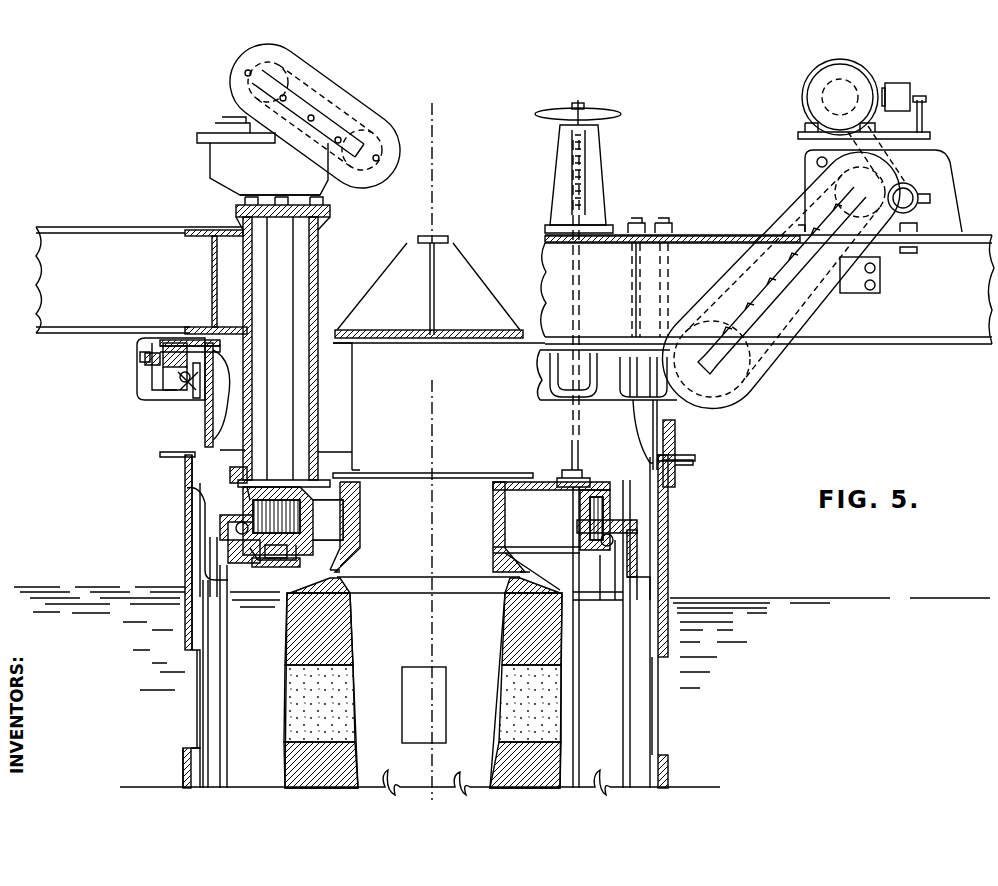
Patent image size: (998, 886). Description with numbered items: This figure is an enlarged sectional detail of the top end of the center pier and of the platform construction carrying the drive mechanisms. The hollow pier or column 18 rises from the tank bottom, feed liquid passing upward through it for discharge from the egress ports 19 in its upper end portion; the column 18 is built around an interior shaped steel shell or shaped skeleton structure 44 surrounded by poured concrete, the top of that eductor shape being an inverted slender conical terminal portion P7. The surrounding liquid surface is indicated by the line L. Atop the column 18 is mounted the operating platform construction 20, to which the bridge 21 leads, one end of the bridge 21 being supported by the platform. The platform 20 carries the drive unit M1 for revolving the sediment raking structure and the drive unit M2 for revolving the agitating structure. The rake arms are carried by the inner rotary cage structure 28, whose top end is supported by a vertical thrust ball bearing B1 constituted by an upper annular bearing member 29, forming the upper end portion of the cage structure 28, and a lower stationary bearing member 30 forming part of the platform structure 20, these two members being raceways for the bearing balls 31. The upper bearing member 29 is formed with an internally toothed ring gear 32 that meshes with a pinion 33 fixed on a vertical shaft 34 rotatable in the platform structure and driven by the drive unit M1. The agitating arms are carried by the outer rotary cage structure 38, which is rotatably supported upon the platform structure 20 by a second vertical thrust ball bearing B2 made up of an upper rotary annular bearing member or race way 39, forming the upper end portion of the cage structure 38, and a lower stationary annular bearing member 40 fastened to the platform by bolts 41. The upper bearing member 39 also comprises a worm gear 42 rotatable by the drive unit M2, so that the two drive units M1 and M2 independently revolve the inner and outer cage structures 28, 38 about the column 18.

The drive unit M1 is at (211, 113).
The drive unit M2 is at (790, 152).
The bridge 21 is at (708, 230).
The upper rotary annular bearing member 39 is at (182, 340).
The bolts 41 is at (146, 356).
The worm gear 42 is at (165, 370).
The operating platform construction 20 is at (136, 397).
The vertical thrust ball bearing B2 is at (179, 380).
The lower stationary annular bearing member 40 is at (197, 397).
The vertical shaft 34 is at (286, 413).
The upper annular bearing member 29 is at (233, 513).
The bearing balls 31 is at (232, 530).
The lower stationary bearing member 30 is at (233, 545).
The vertical thrust ball bearing B1 is at (238, 550).
The pinion 33 is at (283, 519).
The internally toothed ring gear 32 is at (597, 520).
The liquid level L is at (700, 598).
The inverted slender conical terminal portion P7 is at (347, 660).
The discharge or egress ports 19 is at (520, 690).
The interior shaped steel shell or shaped skeleton structure 44 is at (368, 778).
The rotary cage structure 28 is at (227, 705).
The hollow pier or column 18 is at (292, 767).
The outer rotary cage structure 38 is at (182, 762).